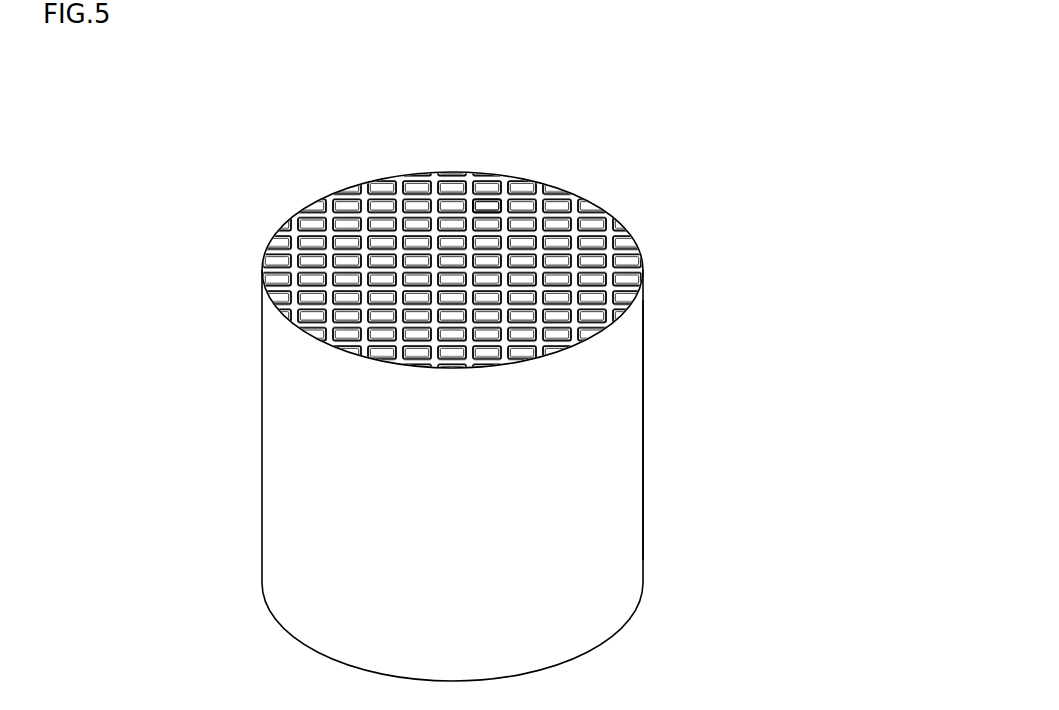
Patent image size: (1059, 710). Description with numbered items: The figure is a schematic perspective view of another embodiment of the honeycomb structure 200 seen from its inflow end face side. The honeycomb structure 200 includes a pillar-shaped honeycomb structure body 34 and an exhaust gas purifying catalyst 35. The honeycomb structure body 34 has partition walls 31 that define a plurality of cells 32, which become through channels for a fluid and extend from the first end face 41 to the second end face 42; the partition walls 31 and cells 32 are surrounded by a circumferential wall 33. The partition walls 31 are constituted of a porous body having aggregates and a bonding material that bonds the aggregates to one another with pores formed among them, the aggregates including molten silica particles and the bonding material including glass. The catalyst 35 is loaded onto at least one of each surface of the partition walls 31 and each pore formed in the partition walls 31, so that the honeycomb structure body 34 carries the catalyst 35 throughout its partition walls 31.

The honeycomb structure 200 is at (709, 72).
The partition wall 31 is at (437, 187).
The cell 32 is at (492, 205).
The circumferential wall 33 is at (645, 343).
The honeycomb structure body 34 is at (650, 427).
The catalyst 35 is at (605, 250).
The first end face 41 is at (452, 226).
The second end face 42 is at (618, 643).